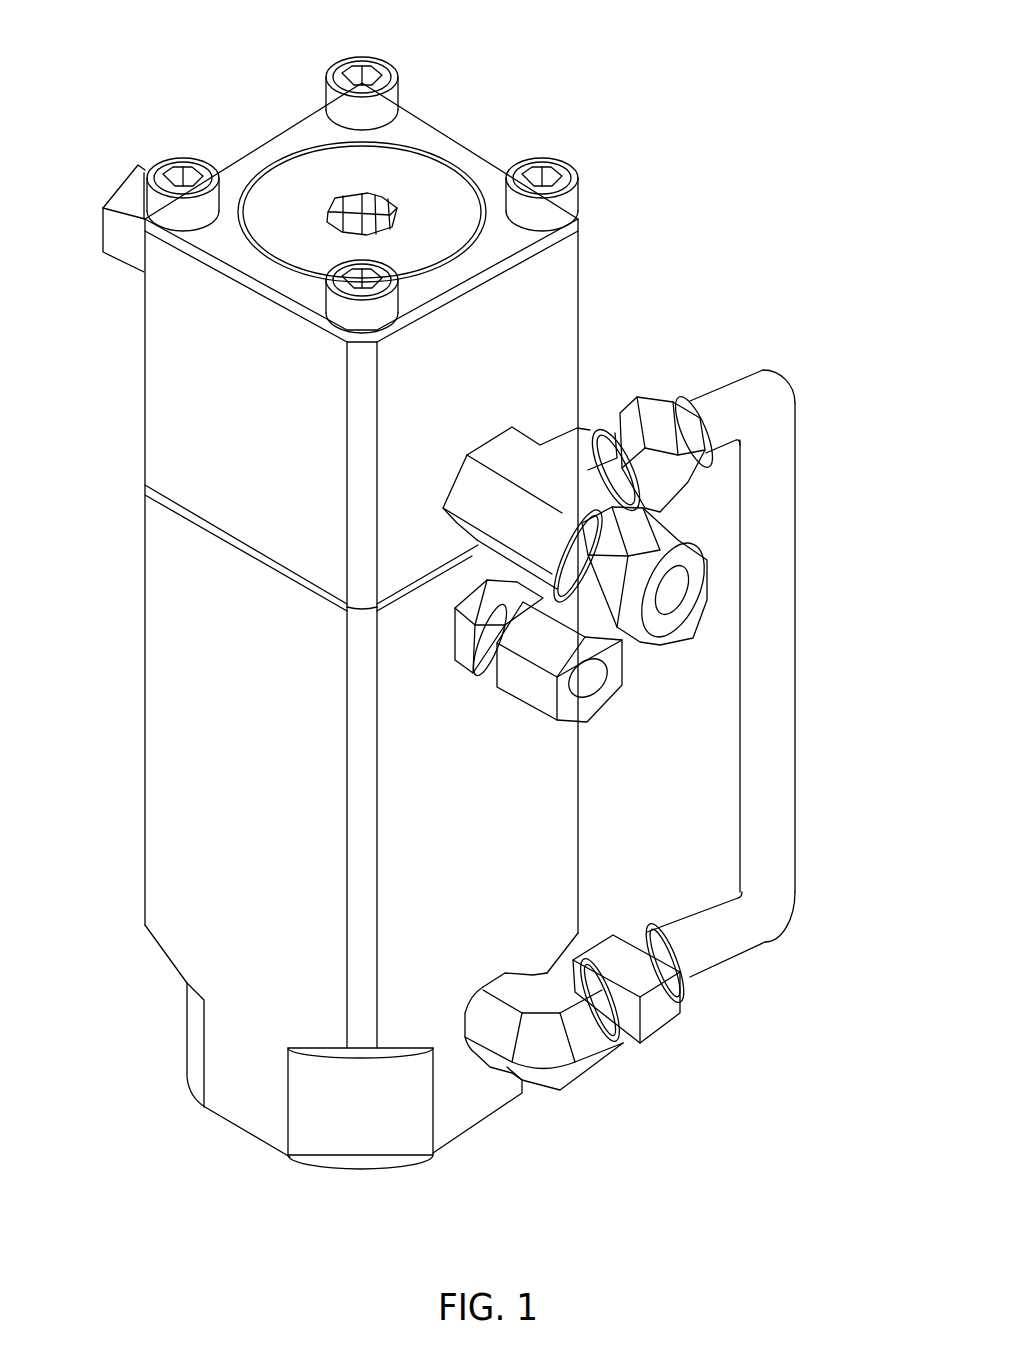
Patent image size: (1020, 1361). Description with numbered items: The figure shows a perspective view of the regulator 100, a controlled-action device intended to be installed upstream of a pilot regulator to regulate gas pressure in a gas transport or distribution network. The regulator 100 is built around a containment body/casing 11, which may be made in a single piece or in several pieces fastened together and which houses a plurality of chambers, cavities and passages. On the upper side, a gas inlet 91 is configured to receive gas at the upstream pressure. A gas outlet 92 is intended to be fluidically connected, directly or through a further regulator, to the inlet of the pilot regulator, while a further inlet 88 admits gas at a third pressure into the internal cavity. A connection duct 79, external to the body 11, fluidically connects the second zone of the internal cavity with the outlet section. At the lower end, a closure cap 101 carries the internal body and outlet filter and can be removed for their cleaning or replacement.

The regulator 100 is at (644, 104).
The containment body/casing 11 is at (204, 709).
The gas inlet 91 is at (120, 203).
The connection duct 79 is at (779, 512).
The gas outlet 92 is at (672, 588).
The further inlet 88 is at (588, 672).
The closure cap 101 is at (348, 1147).